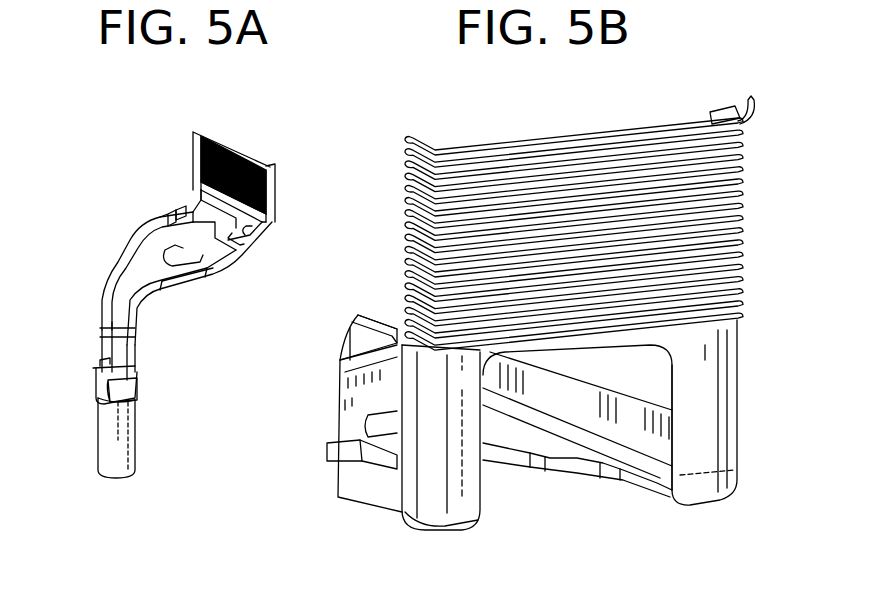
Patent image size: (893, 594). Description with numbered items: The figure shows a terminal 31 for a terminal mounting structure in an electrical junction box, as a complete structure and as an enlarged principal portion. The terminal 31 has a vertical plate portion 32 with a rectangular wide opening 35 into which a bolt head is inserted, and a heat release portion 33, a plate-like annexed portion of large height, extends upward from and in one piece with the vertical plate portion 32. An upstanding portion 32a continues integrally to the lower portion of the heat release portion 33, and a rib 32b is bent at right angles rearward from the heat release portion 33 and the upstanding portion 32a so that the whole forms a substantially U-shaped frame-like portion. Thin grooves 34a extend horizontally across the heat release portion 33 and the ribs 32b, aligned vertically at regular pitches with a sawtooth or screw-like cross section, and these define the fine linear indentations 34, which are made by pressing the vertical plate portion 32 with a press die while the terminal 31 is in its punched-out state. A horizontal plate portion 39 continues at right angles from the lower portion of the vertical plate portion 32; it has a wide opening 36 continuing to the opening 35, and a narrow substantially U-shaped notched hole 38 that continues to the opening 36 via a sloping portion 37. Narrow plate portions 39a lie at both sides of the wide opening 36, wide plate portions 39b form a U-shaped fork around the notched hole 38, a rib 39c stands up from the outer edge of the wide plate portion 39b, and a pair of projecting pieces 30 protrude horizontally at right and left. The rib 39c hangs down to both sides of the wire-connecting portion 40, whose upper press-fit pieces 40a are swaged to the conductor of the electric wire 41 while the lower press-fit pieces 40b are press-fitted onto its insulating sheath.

In FIG. 5A, the projecting piece 30 is at (182, 205).
In FIG. 5B, the projecting piece 30 is at (328, 455).
In FIG. 5A, the terminal 31 is at (110, 212).
In FIG. 5A, the vertical plate portion 32 is at (272, 226).
In FIG. 5B, the vertical plate portion 32 is at (742, 346).
In FIG. 5B, the upstanding portion 32a is at (466, 458).
In FIG. 5B, the rib 32b is at (405, 393).
In FIG. 5A, the heat release portion 33 is at (280, 197).
In FIG. 5B, the heat release portion 33 is at (609, 203).
In FIG. 5B, the fine linear indentations 34 is at (594, 170).
In FIG. 5B, the thin groove 34a is at (755, 90).
In FIG. 5A, the wide opening 35 is at (262, 236).
In FIG. 5A, the wide opening 36 is at (246, 248).
In FIG. 5A, the sloping portion 37 is at (168, 216).
In FIG. 5A, the notched hole 38 is at (183, 265).
In FIG. 5A, the horizontal plate portion 39 is at (222, 284).
In FIG. 5B, the narrow plate portion 39a is at (637, 468).
In FIG. 5B, the wide plate portion 39b is at (552, 428).
In FIG. 5B, the rib 39c is at (375, 313).
In FIG. 5A, the wire-connecting portion 40 is at (140, 357).
In FIG. 5A, the press-fit piece 40a is at (140, 392).
In FIG. 5A, the press-fit piece 40b is at (138, 435).
In FIG. 5A, the electric wire 41 is at (100, 447).